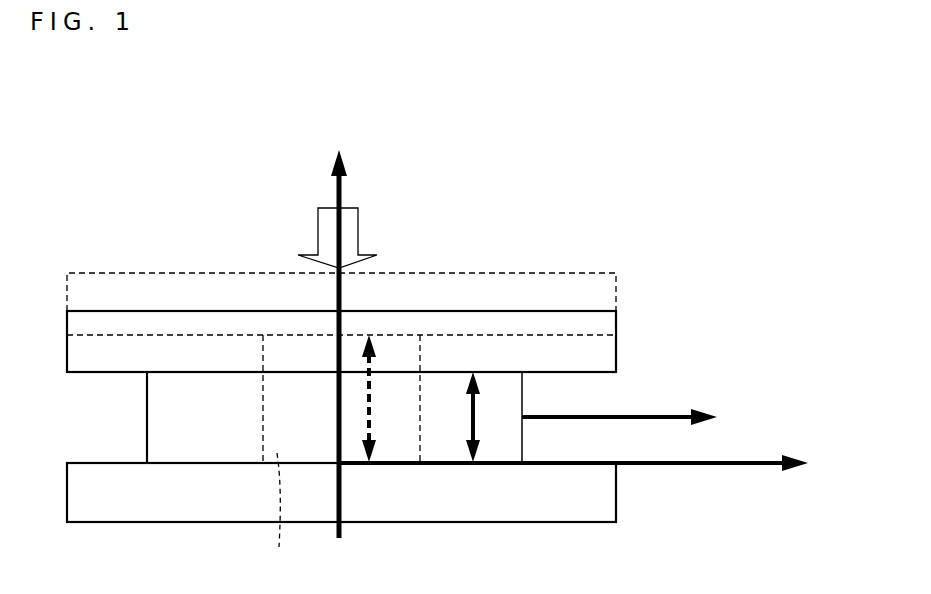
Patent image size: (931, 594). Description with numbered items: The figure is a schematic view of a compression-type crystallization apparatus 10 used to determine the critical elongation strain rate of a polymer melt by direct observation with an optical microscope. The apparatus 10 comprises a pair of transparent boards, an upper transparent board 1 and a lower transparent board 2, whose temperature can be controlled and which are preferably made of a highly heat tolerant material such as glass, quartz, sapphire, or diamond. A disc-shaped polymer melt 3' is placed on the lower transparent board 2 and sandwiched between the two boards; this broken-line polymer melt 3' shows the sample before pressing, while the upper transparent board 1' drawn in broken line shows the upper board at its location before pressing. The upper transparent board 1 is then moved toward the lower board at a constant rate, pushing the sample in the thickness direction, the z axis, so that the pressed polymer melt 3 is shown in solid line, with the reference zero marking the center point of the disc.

The compression-type crystallization apparatus 10 is at (650, 128).
The upper transparent board 1 is at (359, 341).
The upper transparent board before pressing 1' is at (341, 267).
The lower transparent board 2 is at (578, 512).
The polymer melt 3 is at (315, 417).
The polymer melt before pressing 3' is at (277, 511).